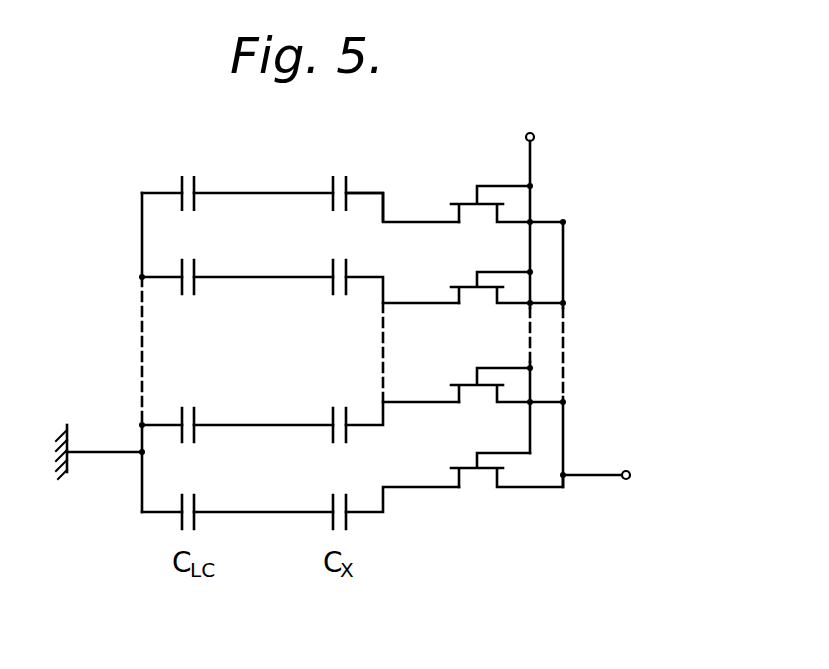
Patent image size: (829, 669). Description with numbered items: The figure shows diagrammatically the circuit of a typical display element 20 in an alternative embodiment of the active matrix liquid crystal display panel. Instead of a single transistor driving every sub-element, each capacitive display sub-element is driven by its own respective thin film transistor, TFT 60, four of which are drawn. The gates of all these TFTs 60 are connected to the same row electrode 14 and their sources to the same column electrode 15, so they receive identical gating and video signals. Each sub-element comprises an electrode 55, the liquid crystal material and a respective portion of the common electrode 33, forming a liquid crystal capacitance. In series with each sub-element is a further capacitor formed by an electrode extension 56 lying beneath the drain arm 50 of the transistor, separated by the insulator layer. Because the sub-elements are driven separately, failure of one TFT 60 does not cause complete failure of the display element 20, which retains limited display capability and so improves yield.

The electrode 33 is at (179, 186).
The electrodes 55 is at (196, 185).
The extension layers 56 is at (331, 186).
The arm 50 is at (348, 185).
The display element 20 is at (392, 178).
The TFT 60 is at (467, 202).
The row electrode 14 is at (534, 134).
The column electrode 15 is at (630, 477).